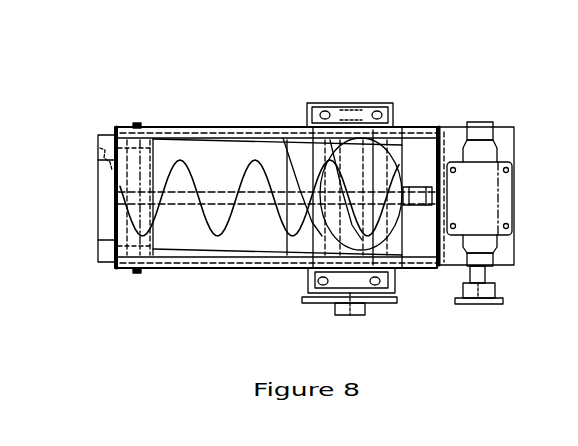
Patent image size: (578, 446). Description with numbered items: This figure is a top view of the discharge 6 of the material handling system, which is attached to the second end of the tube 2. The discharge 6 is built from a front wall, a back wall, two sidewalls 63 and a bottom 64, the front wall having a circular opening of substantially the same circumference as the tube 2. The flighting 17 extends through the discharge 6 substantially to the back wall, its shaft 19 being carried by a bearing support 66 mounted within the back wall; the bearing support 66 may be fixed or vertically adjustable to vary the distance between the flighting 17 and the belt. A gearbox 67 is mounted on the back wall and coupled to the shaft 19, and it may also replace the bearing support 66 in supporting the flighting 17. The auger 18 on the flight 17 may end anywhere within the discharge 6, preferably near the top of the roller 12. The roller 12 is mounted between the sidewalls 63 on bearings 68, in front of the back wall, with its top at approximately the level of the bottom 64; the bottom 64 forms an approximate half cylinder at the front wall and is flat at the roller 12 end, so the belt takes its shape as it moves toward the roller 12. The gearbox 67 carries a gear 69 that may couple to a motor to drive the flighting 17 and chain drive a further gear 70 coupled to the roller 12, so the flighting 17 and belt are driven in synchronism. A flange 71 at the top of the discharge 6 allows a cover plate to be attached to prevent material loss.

The tube 2 is at (100, 158).
The discharge 6 is at (427, 91).
The roller 12 is at (372, 132).
The flighting 17 is at (202, 226).
The auger 18 is at (256, 178).
The shaft 19 is at (210, 182).
The sidewalls 63 is at (238, 131).
The bottom 64 is at (163, 158).
The bearing support 66 is at (441, 157).
The gearbox 67 is at (482, 190).
The bearings 68 is at (336, 105).
The gear 69 is at (492, 304).
The further gear 70 is at (375, 304).
The flange 71 is at (165, 258).